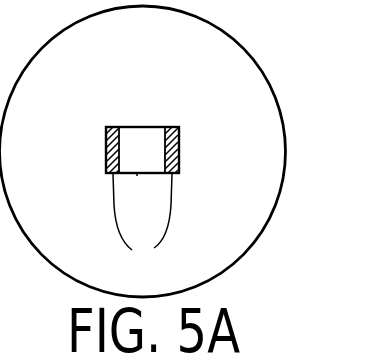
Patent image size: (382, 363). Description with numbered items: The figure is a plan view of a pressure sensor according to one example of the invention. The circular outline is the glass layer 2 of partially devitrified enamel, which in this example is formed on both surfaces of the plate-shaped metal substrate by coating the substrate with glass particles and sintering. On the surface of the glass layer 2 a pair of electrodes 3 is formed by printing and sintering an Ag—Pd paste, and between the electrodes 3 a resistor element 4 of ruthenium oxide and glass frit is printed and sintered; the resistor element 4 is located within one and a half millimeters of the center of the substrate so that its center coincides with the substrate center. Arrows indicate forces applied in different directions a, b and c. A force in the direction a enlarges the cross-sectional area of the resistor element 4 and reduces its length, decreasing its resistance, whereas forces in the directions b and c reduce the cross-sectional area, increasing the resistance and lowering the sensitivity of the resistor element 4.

The glass layer 2 is at (248, 182).
The electrodes 3 is at (142, 218).
The resistor element 4 is at (137, 175).
The direction a is at (152, 150).
The direction b is at (153, 135).
The direction c is at (142, 135).